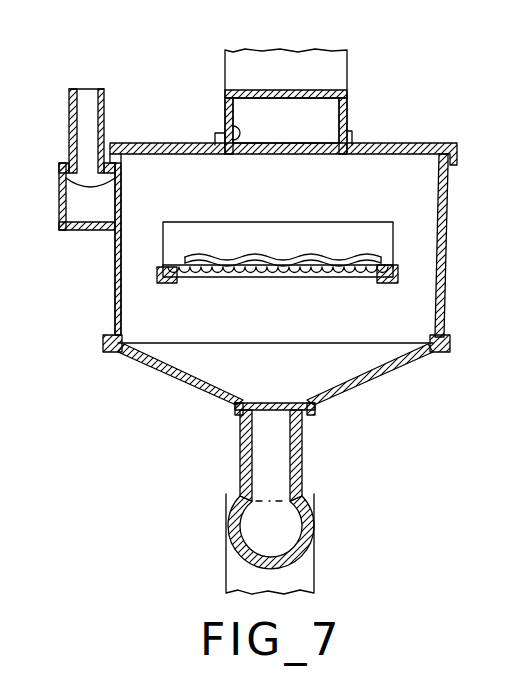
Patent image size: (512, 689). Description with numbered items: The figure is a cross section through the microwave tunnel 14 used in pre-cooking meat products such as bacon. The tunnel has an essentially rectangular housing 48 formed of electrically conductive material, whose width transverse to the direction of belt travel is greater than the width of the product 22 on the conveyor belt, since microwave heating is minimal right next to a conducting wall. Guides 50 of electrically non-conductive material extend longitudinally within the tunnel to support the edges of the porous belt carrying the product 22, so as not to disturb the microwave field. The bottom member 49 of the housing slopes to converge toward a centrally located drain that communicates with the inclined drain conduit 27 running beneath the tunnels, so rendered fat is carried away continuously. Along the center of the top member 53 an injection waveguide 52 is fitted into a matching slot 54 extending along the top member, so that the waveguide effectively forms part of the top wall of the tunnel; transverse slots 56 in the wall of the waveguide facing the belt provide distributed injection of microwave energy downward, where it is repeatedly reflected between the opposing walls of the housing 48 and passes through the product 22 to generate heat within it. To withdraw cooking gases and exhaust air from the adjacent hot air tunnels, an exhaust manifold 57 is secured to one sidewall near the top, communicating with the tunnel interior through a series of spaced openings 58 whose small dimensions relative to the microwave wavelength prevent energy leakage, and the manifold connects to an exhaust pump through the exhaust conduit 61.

The microwave tunnel 14 is at (407, 108).
The product 22 is at (305, 258).
The drain conduit 27 is at (315, 550).
The housing 48 is at (447, 205).
The bottom member 49 is at (377, 378).
The guides 50 is at (402, 278).
The injection waveguide 52 is at (303, 91).
The top member 53 is at (425, 144).
The slot 54 is at (226, 121).
The transverse slots 56 is at (255, 143).
The exhaust manifold 57 is at (78, 232).
The openings 58 is at (60, 185).
The exhaust conduit 61 is at (105, 108).